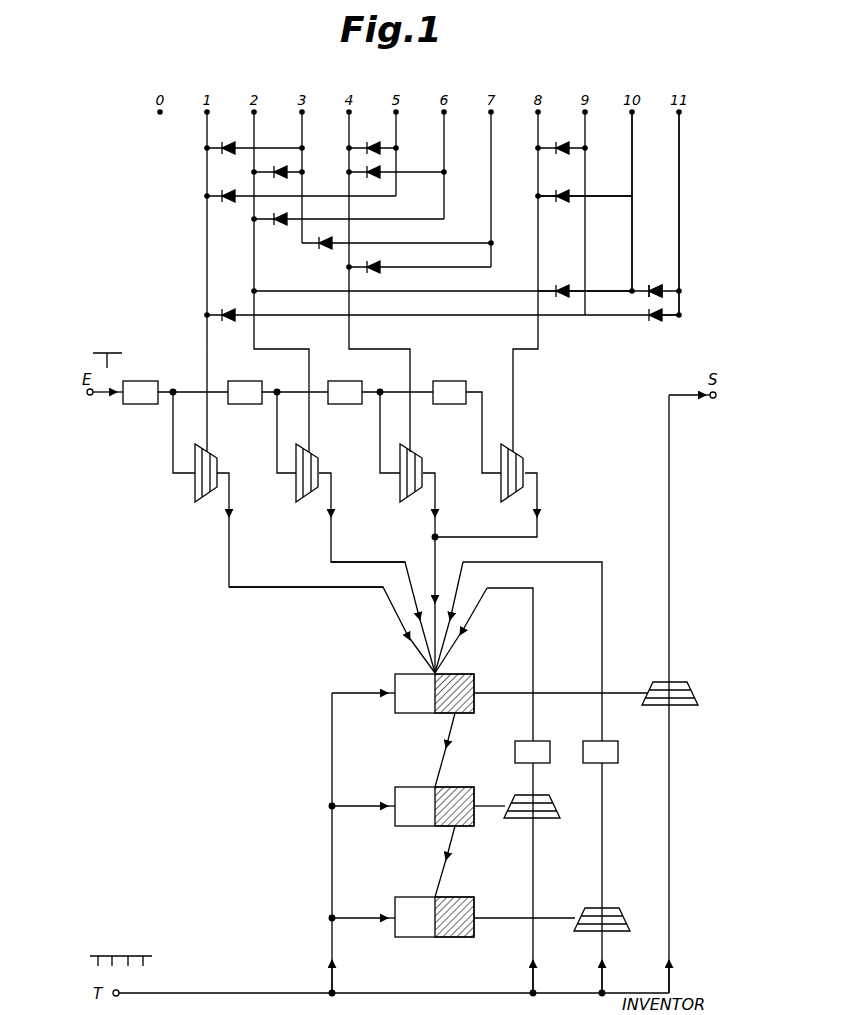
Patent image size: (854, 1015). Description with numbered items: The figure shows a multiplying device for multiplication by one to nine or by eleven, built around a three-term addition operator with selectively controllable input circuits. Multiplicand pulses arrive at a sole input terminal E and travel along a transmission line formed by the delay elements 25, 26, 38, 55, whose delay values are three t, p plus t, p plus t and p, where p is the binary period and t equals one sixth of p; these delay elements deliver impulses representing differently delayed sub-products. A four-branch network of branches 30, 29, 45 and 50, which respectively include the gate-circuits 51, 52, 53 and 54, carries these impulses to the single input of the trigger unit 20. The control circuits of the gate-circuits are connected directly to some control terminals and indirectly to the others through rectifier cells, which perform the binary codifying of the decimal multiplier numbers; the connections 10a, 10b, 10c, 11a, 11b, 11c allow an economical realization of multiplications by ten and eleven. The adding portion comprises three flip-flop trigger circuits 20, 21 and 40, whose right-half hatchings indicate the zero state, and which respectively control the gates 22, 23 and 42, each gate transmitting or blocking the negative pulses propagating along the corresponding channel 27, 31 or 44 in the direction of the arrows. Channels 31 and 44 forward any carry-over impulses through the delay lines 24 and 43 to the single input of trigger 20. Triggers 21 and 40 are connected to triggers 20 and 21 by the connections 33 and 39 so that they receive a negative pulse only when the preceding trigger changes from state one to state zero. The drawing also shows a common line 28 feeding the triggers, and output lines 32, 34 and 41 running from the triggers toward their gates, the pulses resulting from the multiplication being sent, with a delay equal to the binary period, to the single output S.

The connection 10a is at (633, 196).
The connection 10b is at (612, 190).
The connection 10c is at (603, 291).
The connection 11a is at (680, 204).
The connection 11b is at (660, 288).
The connection 11c is at (676, 316).
The trigger circuit 20 is at (412, 714).
The trigger circuit 21 is at (412, 827).
The gate circuit 22 is at (688, 706).
The gate circuit 23 is at (560, 810).
The delay line 24 is at (544, 741).
The delay element 25 is at (148, 380).
The delay element 26 is at (252, 380).
The channel 27 is at (430, 993).
The bus line 28 is at (332, 828).
The branch 29 is at (277, 430).
The branch 30 is at (173, 430).
The channel 31 is at (533, 615).
The output line 32 is at (546, 693).
The connection 33 is at (452, 735).
The output line 34 is at (490, 806).
The delay element 38 is at (352, 380).
The connection 39 is at (459, 866).
The trigger circuit 40 is at (412, 938).
The output line 41 is at (498, 918).
The gate circuit 42 is at (620, 912).
The delay line 43 is at (612, 741).
The channel 44 is at (602, 615).
The branch 45 is at (380, 430).
The branch 50 is at (438, 537).
The gate circuit 51 is at (196, 500).
The gate circuit 52 is at (298, 500).
The gate circuit 53 is at (402, 500).
The gate circuit 54 is at (503, 500).
The delay element 55 is at (455, 380).